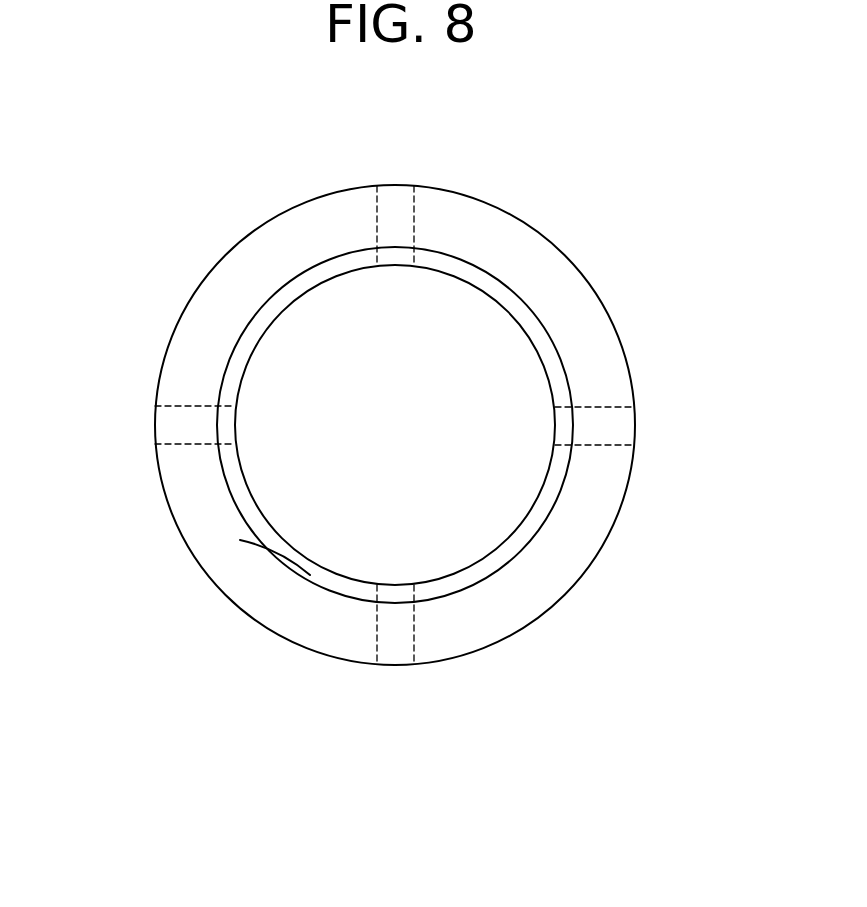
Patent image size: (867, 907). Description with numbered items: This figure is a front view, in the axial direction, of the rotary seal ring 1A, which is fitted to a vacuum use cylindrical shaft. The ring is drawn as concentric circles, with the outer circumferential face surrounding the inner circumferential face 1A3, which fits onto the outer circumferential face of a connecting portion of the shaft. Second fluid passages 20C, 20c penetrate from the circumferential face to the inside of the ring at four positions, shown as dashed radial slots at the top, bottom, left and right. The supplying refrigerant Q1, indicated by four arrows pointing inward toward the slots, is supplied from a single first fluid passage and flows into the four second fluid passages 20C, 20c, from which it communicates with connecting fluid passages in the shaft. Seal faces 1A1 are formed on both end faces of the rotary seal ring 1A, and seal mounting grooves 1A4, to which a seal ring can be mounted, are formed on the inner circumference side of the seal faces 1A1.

The rotary seal ring 1A is at (568, 247).
The seal face 1A1 is at (577, 343).
The inner circumferential face 1A3 is at (511, 538).
The seal mounting groove 1A4 is at (242, 503).
The second fluid passage 20C is at (380, 217).
The second fluid passage 20c is at (197, 440).
The supplying refrigerant Q1 is at (396, 170).